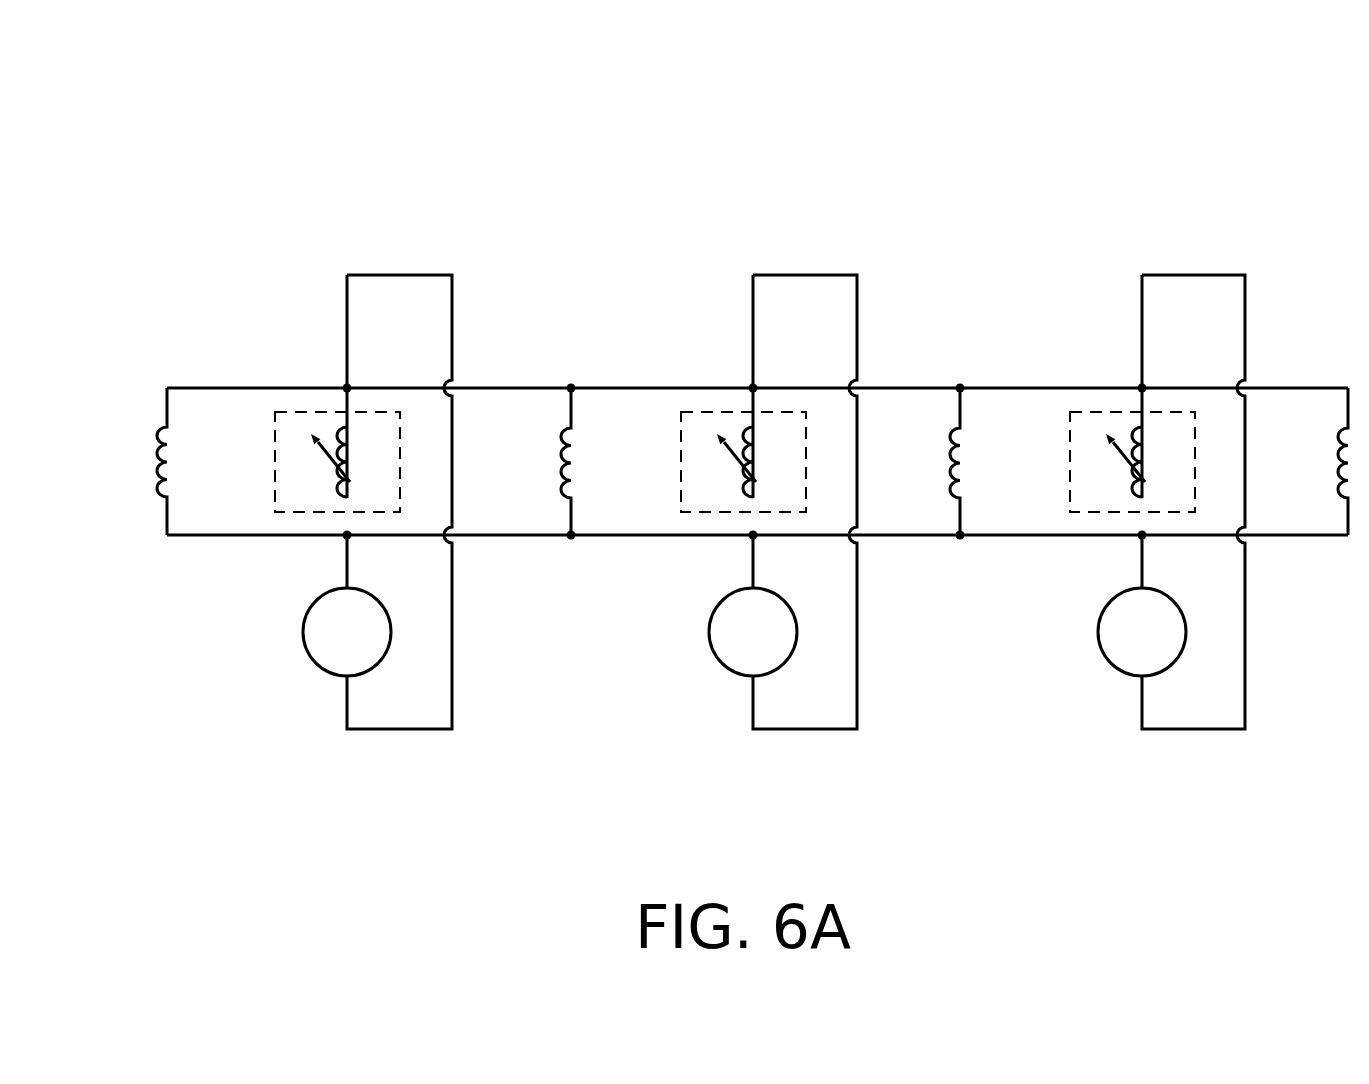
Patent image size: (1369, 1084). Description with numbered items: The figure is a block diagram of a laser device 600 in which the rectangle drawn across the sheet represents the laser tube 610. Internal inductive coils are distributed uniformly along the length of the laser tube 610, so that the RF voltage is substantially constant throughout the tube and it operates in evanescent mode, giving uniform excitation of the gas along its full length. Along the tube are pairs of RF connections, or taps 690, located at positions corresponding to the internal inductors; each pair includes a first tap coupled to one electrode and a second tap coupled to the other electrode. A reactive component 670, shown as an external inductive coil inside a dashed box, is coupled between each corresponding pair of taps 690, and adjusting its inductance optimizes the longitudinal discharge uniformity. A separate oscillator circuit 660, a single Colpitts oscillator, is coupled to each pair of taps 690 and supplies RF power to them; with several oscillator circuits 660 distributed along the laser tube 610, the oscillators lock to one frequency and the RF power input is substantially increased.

The laser device 600 is at (751, 67).
The laser tube 610 is at (136, 463).
The oscillator circuit 660 is at (310, 600).
The reactive component 670 is at (275, 470).
The RF connections (taps) 690 is at (347, 388).